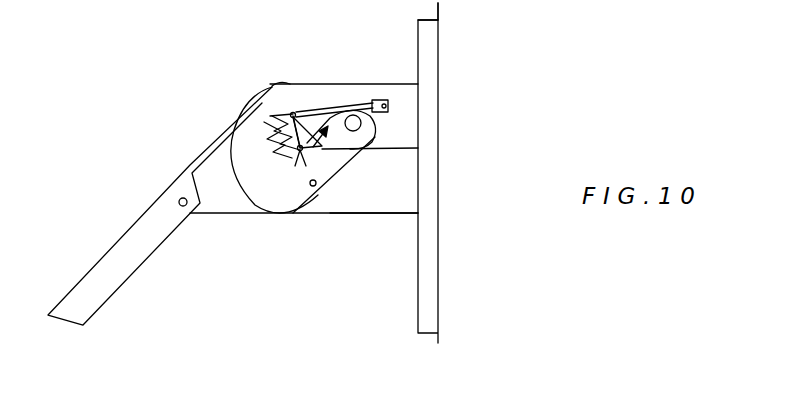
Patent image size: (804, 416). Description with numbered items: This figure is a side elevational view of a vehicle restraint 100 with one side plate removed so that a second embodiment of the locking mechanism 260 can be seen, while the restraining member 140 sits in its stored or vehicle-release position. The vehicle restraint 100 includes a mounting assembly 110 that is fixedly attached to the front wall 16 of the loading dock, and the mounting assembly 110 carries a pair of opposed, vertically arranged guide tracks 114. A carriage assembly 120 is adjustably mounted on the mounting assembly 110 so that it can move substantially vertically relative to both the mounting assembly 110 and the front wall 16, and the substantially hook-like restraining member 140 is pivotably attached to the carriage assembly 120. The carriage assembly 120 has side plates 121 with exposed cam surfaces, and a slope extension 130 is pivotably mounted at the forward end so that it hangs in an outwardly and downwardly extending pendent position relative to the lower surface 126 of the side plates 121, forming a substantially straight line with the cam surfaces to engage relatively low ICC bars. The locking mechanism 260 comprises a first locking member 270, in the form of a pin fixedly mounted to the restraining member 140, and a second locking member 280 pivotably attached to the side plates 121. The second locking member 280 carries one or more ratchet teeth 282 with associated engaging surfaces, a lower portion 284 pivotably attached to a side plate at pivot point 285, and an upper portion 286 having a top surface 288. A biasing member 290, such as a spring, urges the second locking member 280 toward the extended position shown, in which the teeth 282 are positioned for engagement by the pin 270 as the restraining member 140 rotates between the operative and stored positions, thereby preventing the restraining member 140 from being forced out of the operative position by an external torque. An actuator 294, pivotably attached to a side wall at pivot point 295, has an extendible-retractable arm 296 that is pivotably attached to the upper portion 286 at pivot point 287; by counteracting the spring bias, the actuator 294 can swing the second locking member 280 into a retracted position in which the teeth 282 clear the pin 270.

The vehicle restraint 100 is at (133, 177).
The mounting assembly 110 is at (402, 332).
The guide tracks 114 is at (418, 33).
The front wall 16 is at (438, 8).
The carriage assembly 120 is at (385, 224).
The lower surface 126 is at (347, 214).
The slope extension 130 is at (112, 248).
The restraining member 140 is at (263, 197).
The side plates 121 is at (398, 131).
The biasing member 290 is at (418, 148).
The first locking member 270 is at (315, 187).
The locking mechanism 260 is at (288, 112).
The ratchet teeth 282 is at (265, 131).
The pivot point 287 is at (283, 99).
The top surface 288 is at (283, 113).
The upper portion 286 is at (297, 110).
The extendible-retractable arm 296 is at (318, 109).
The actuator 294 is at (388, 100).
The pivot point 295 is at (390, 107).
The second locking member 280 is at (296, 150).
The pivot point 285 is at (299, 152).
The lower portion 284 is at (299, 153).